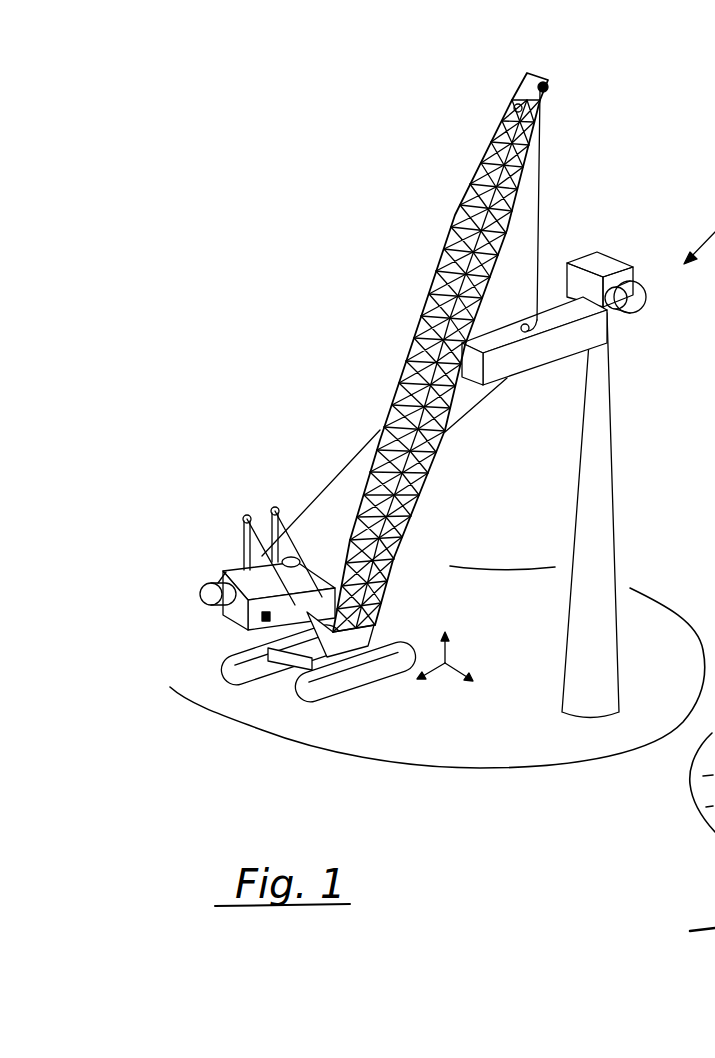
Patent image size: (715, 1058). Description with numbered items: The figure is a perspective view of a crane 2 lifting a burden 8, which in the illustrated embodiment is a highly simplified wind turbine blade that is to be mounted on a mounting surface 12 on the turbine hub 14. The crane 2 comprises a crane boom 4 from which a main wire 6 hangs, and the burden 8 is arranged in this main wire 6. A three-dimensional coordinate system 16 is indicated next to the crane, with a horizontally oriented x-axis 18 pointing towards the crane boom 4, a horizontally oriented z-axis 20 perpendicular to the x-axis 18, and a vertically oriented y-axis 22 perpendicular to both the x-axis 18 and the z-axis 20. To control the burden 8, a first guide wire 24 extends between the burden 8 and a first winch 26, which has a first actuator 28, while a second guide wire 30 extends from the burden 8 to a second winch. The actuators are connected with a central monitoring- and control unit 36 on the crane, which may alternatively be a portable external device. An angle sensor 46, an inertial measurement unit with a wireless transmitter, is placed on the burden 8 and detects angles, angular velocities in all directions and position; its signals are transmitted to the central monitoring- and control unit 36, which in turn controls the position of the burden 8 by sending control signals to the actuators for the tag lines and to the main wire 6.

The crane 2 is at (370, 389).
The crane boom 4 is at (462, 200).
The main wire 6 is at (540, 201).
The burden 8 is at (542, 350).
The mounting surface 12 is at (613, 306).
The turbine hub 14 is at (640, 300).
The three-dimensional coordinate system 16 is at (479, 662).
The x-axis 18 is at (458, 672).
The z-axis 20 is at (436, 672).
The y-axis 22 is at (445, 650).
The first guide wire 24 is at (313, 500).
The first winch 26 is at (218, 602).
The first actuator 28 is at (219, 580).
The second guide wire 30 is at (462, 420).
The central monitoring- and control unit 36 is at (266, 622).
The angle sensor 46 is at (519, 314).